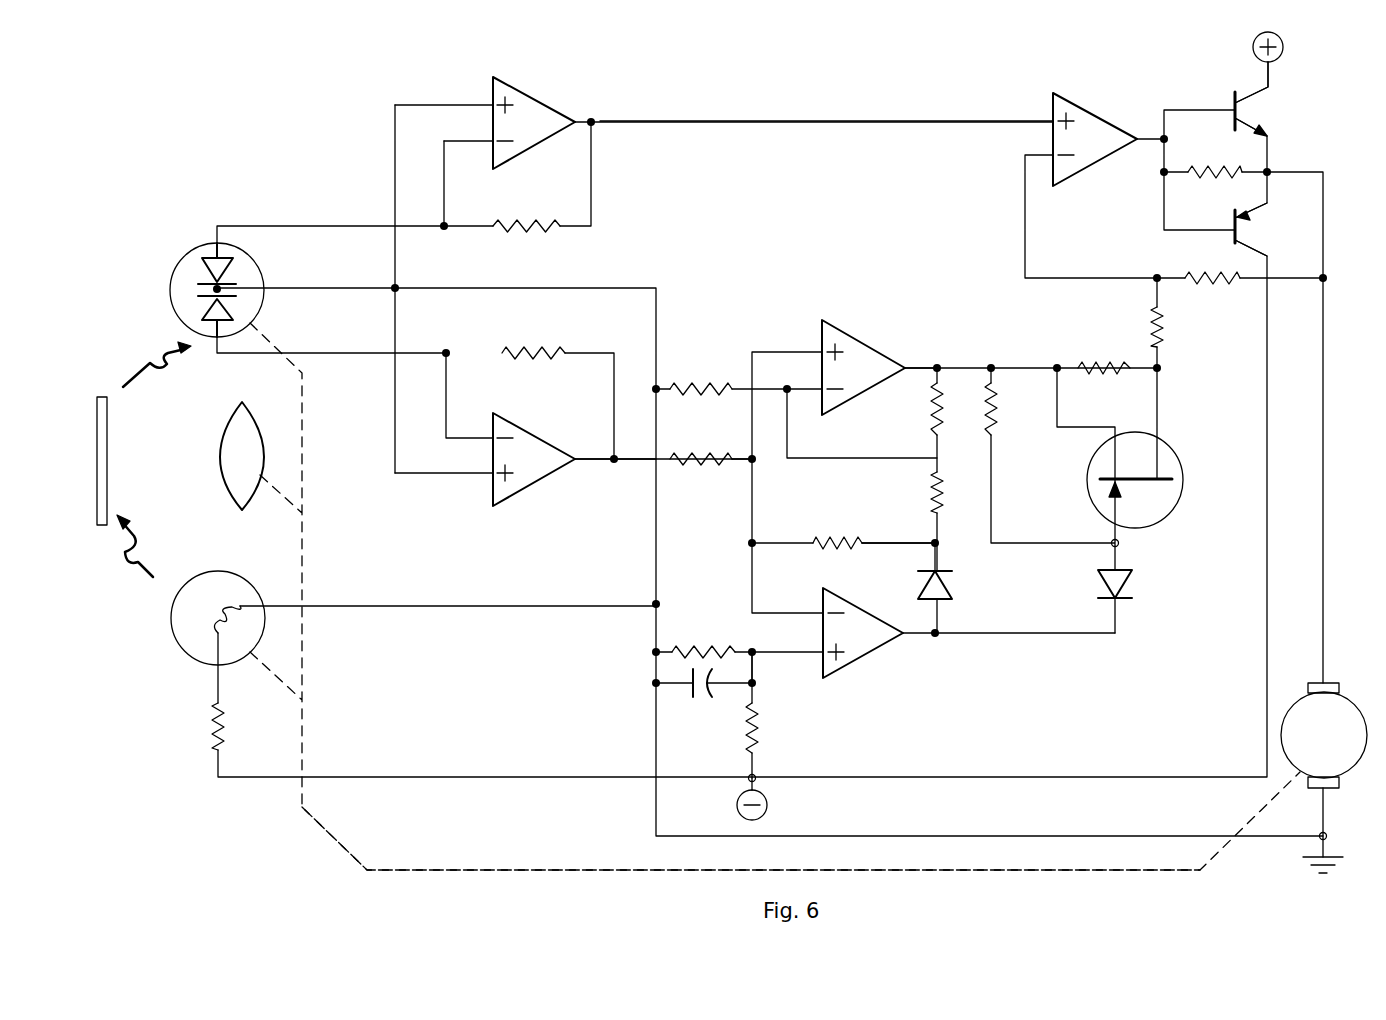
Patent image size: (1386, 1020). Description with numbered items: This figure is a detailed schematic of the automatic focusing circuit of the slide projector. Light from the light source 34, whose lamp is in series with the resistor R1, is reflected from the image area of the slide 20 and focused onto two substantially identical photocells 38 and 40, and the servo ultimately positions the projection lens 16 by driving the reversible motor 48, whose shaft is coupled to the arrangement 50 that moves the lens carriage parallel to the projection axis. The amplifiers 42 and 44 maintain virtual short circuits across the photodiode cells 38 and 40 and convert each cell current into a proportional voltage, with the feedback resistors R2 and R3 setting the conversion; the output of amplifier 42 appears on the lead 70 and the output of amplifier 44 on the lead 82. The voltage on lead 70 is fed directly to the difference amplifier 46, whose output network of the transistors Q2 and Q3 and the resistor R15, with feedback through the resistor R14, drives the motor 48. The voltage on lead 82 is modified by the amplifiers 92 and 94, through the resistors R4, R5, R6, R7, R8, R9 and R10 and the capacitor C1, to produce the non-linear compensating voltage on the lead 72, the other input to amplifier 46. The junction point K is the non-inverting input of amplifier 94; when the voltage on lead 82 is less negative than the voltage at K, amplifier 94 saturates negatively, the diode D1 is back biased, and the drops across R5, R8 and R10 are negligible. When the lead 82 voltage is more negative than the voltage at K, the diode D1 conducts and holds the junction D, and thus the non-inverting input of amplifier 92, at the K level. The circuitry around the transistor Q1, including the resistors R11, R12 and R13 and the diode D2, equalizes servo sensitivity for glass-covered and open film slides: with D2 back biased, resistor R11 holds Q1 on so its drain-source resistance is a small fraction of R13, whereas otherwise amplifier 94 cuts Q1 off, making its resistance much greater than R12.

The projection lens 16 is at (222, 478).
The slide 20 is at (94, 488).
The light source 34 is at (218, 571).
The photocell 38 is at (207, 275).
The photocell 40 is at (207, 300).
The amplifier 42 is at (552, 85).
The amplifier 44 is at (542, 440).
The difference amplifier 46 is at (1108, 116).
The reversible motor 48 is at (1366, 712).
The arrangement for moving the carriage 50 is at (342, 858).
The lead 70 is at (926, 121).
The lead 72 is at (960, 368).
The lead 82 is at (614, 463).
The amplifier 92 is at (874, 346).
The amplifier 94 is at (860, 658).
The resistor R1 is at (224, 736).
The resistor R2 is at (540, 207).
The resistor R3 is at (540, 330).
The resistor R4 is at (716, 366).
The resistor R5 is at (728, 436).
The resistor R6 is at (708, 648).
The resistor R7 is at (758, 728).
The resistor R8 is at (850, 527).
The resistor R9 is at (940, 392).
The resistor R10 is at (940, 480).
The resistor R11 is at (994, 392).
The resistor R12 is at (1122, 350).
The resistor R13 is at (1163, 328).
The resistor R14 is at (1228, 258).
The resistor R15 is at (1232, 152).
The capacitor C1 is at (690, 700).
The transistor Q1 is at (1168, 522).
The transistor Q2 is at (1252, 110).
The transistor Q3 is at (1250, 222).
The diode D1 is at (950, 586).
The diode D2 is at (1128, 582).
The junction D is at (938, 543).
The junction point K is at (758, 657).